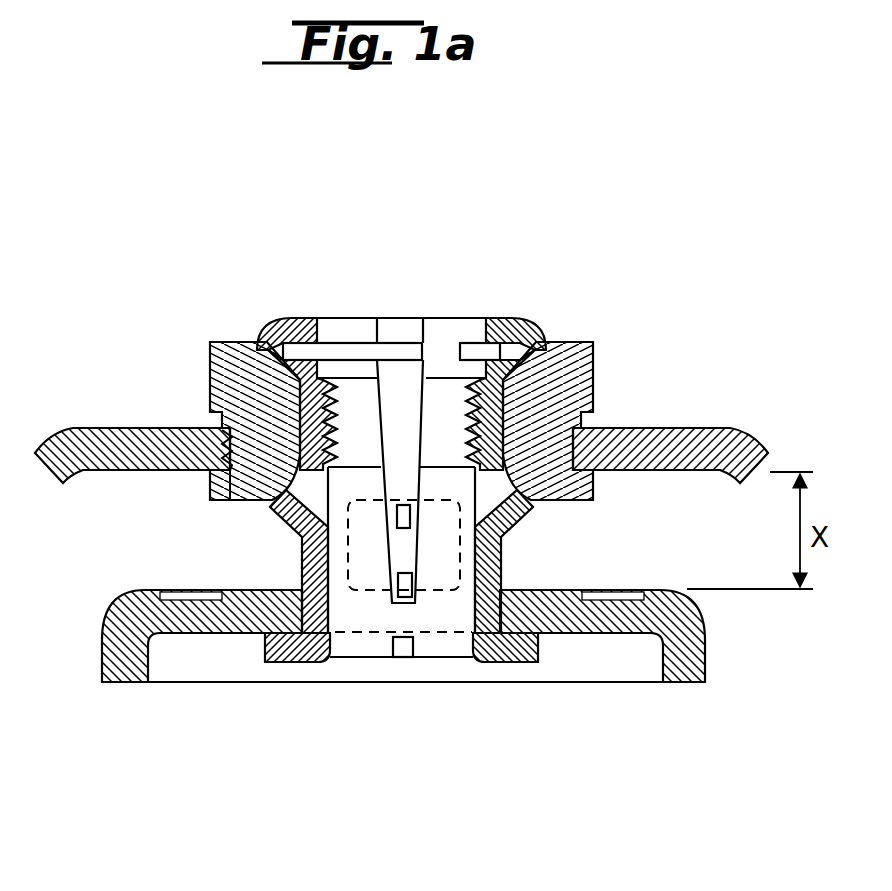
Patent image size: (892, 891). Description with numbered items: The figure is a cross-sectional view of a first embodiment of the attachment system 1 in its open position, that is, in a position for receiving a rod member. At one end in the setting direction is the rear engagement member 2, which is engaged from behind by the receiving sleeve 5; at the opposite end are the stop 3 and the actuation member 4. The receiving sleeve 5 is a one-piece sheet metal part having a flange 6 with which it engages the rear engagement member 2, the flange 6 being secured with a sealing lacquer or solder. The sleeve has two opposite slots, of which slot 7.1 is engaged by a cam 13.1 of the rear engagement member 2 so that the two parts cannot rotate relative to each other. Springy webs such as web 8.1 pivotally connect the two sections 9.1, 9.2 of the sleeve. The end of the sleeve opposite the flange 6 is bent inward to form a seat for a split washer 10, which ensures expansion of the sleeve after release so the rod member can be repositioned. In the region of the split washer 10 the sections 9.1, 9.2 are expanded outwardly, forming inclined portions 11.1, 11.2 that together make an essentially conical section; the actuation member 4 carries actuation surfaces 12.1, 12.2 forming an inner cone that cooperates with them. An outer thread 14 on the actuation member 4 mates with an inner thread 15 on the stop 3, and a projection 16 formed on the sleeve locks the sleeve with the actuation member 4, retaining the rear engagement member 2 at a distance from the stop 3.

The attachment system 1 is at (688, 222).
The rear engagement member 2 is at (122, 652).
The stop 3 is at (70, 457).
The actuation member 4 is at (402, 387).
The receiving sleeve 5 is at (399, 429).
The flange 6 is at (289, 660).
The slot 7.1 is at (492, 417).
The springy web 8.1 is at (411, 612).
The section of the receiving sleeve 9.1 is at (304, 570).
The section of the receiving sleeve 9.2 is at (490, 570).
The split washer 10 is at (351, 348).
The inclined portion 11.1 is at (265, 385).
The inclined portion 11.2 is at (540, 380).
The actuation surface 12.1 is at (262, 337).
The actuation surface 12.2 is at (541, 325).
The cam 13.1 is at (405, 512).
The outer thread 14 is at (212, 405).
The inner thread 15 is at (205, 482).
The projection 16 is at (285, 508).